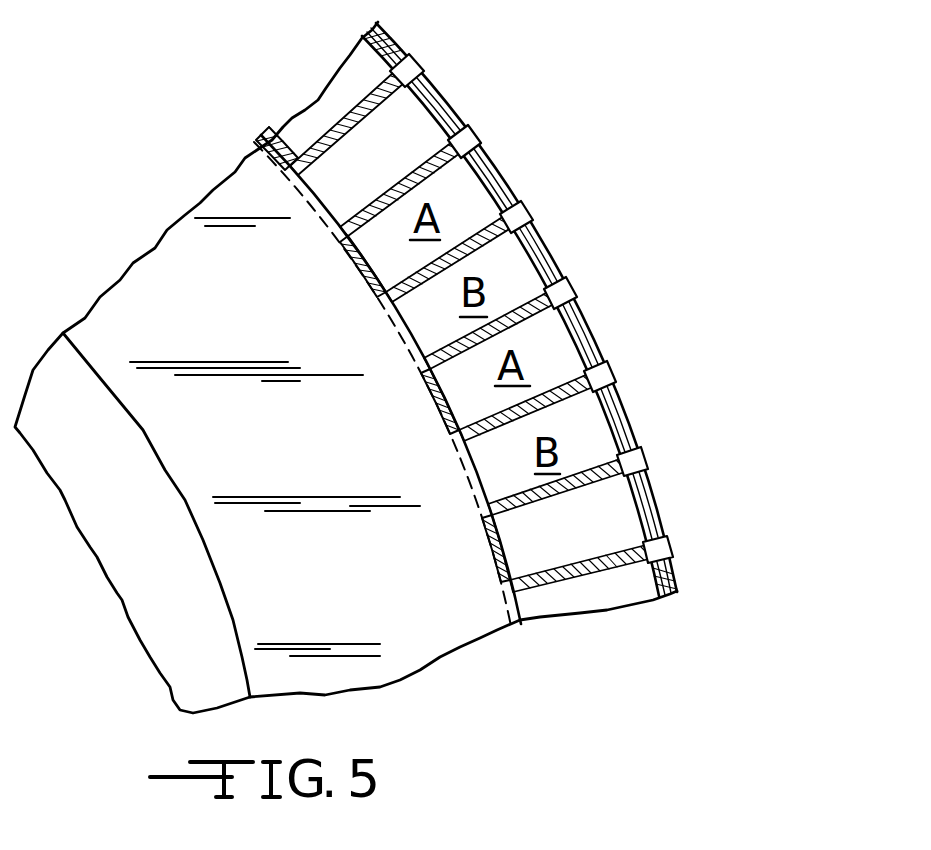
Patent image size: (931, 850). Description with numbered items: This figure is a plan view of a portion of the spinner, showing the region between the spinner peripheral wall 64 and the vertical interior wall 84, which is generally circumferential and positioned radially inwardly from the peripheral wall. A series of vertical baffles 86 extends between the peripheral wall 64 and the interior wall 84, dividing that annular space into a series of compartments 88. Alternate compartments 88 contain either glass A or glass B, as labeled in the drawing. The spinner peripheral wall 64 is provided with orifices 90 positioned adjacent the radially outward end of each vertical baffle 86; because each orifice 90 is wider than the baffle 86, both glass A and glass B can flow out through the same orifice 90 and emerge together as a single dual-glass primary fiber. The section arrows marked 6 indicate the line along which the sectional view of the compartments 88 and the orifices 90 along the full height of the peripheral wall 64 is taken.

The spinner peripheral wall 64 is at (665, 522).
The vertical interior wall 84 is at (500, 547).
The vertical baffles 86 is at (386, 99).
The compartments 88 is at (394, 296).
The orifices 90 is at (523, 208).
The section line 6- 6 is at (650, 620).